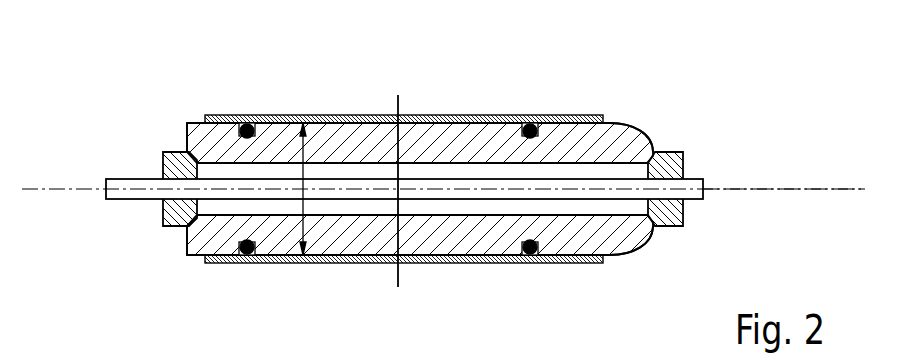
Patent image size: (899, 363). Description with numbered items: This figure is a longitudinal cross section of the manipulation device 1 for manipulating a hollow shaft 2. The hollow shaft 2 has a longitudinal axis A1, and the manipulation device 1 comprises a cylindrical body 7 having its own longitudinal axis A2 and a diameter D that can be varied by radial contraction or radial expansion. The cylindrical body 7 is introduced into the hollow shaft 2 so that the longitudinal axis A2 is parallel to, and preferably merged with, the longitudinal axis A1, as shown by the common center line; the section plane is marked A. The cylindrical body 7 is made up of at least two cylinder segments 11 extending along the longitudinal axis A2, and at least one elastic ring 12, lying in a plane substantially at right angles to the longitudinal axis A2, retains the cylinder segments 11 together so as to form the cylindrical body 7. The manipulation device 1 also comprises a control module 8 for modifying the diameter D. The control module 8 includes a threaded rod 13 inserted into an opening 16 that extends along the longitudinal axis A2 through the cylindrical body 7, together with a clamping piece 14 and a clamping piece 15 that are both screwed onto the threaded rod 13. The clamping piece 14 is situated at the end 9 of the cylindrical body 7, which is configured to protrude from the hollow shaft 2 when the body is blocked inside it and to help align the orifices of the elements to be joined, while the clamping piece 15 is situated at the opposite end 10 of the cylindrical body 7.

The manipulation device 1 is at (443, 178).
The hollow shaft 2 is at (436, 177).
The cylindrical body 7 is at (352, 238).
The control module 8 is at (165, 242).
The end 9 is at (627, 137).
The end 10 is at (187, 123).
The cylinder segments 11 is at (562, 133).
The elastic ring 12 is at (247, 126).
The threaded rod 13 is at (130, 199).
The clamping piece 14 is at (672, 152).
The clamping piece 15 is at (163, 152).
The opening 16 is at (452, 202).
The diameter D is at (305, 172).
The section line A is at (397, 193).
The longitudinal axis A1 is at (813, 189).
The longitudinal axis A2 is at (743, 190).